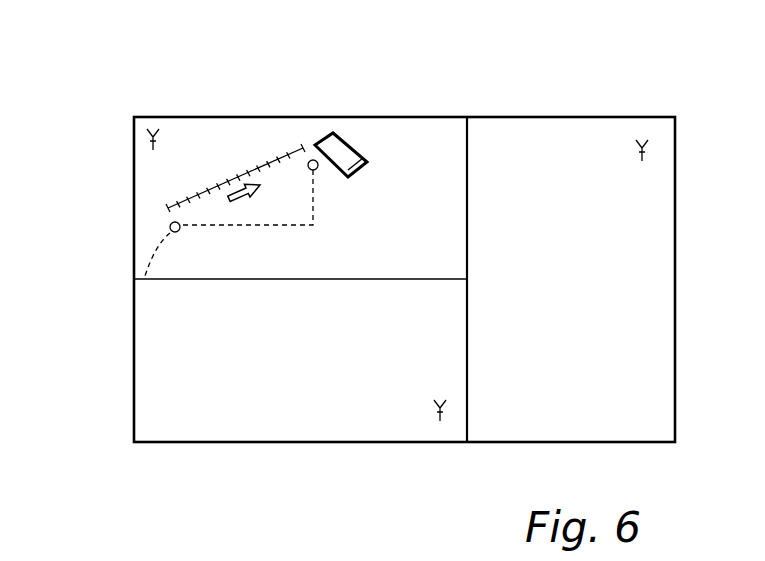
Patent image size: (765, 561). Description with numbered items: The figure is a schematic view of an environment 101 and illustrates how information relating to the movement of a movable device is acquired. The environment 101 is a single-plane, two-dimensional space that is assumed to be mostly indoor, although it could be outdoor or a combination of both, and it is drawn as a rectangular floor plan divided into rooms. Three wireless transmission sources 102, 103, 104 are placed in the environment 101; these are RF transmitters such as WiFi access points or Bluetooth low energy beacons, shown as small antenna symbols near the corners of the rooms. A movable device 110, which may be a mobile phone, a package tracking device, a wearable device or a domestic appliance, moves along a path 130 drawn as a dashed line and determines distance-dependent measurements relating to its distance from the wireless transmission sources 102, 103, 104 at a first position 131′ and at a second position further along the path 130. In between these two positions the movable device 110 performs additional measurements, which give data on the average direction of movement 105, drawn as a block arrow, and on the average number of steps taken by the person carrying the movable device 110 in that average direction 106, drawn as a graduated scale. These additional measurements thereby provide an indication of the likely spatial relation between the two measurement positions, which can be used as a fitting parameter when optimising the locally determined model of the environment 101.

The environment 101 is at (565, 115).
The wireless transmission source 102 is at (147, 143).
The wireless transmission source 103 is at (437, 412).
The wireless transmission source 104 is at (648, 148).
The average direction of movement 105 is at (245, 203).
The average number of steps 106 is at (267, 162).
The movable device 110 is at (347, 152).
The path 130 is at (270, 226).
The position 131′ is at (178, 233).